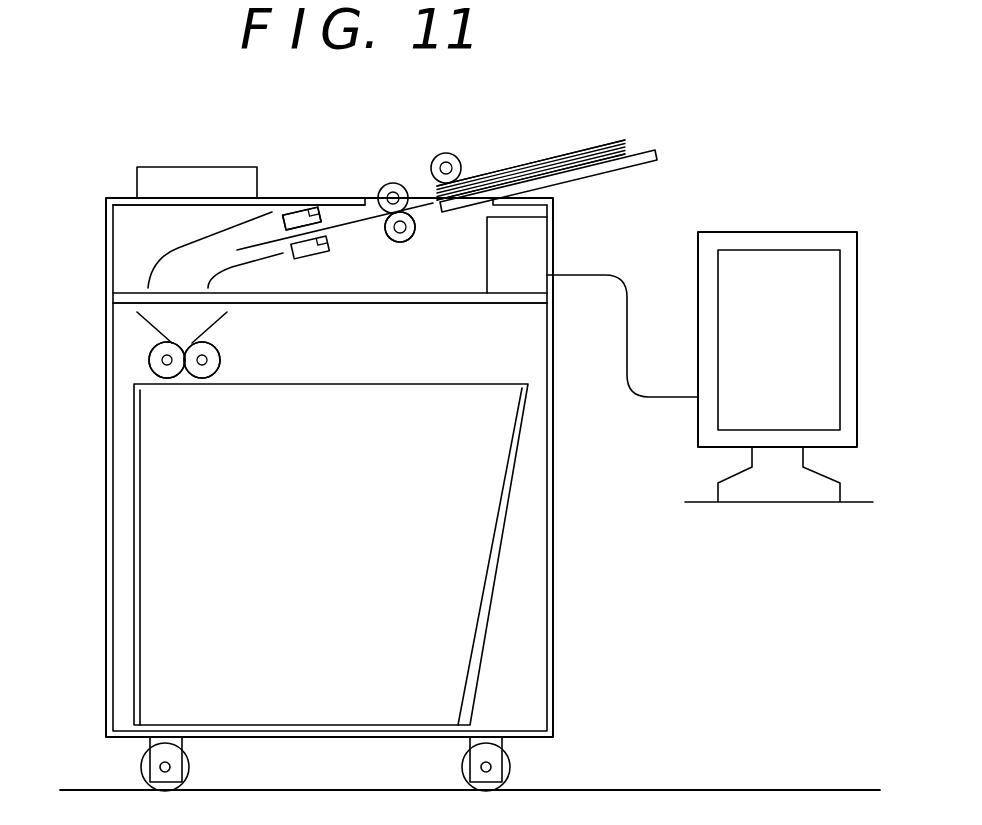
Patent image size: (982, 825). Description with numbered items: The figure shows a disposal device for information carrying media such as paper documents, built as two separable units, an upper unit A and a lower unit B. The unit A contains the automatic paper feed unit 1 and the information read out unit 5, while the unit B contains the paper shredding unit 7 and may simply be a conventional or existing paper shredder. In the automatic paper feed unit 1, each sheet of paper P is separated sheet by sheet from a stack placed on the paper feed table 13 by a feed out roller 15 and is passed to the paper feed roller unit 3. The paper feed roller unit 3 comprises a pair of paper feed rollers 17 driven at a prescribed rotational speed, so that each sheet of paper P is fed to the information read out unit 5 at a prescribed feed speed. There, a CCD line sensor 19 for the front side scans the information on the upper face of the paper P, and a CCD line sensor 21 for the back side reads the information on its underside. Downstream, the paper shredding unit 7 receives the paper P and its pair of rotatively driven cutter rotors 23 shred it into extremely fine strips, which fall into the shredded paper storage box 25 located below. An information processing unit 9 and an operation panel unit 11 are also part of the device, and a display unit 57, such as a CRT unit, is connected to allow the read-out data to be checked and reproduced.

The automatic paper feed unit 1 is at (593, 128).
The paper P is at (548, 160).
The paper feed roller unit 3 is at (416, 171).
The information read out unit 5 is at (299, 206).
The paper shredding unit 7 is at (242, 357).
The information processing unit 9 is at (530, 275).
The operation panel unit 11 is at (188, 167).
The paper feed table 13 is at (620, 172).
The feed out roller 15 is at (459, 160).
The paper feed rollers 17 is at (410, 205).
The CCD line sensor for the front side 19 is at (308, 207).
The CCD line sensor for the back side 21 is at (320, 256).
The cutter rotors 23 is at (168, 371).
The shredded paper storage box 25 is at (510, 476).
The display unit 57 is at (768, 232).
The unit A is at (95, 248).
The unit B is at (95, 455).